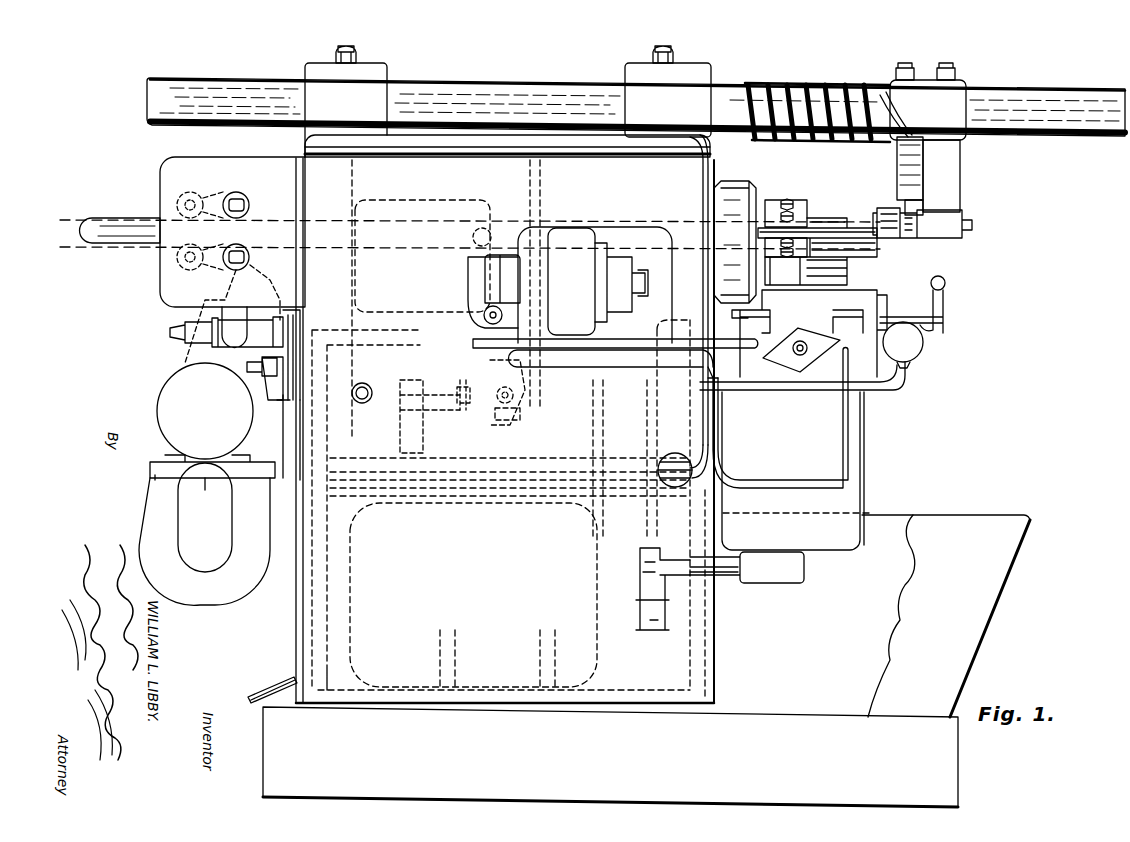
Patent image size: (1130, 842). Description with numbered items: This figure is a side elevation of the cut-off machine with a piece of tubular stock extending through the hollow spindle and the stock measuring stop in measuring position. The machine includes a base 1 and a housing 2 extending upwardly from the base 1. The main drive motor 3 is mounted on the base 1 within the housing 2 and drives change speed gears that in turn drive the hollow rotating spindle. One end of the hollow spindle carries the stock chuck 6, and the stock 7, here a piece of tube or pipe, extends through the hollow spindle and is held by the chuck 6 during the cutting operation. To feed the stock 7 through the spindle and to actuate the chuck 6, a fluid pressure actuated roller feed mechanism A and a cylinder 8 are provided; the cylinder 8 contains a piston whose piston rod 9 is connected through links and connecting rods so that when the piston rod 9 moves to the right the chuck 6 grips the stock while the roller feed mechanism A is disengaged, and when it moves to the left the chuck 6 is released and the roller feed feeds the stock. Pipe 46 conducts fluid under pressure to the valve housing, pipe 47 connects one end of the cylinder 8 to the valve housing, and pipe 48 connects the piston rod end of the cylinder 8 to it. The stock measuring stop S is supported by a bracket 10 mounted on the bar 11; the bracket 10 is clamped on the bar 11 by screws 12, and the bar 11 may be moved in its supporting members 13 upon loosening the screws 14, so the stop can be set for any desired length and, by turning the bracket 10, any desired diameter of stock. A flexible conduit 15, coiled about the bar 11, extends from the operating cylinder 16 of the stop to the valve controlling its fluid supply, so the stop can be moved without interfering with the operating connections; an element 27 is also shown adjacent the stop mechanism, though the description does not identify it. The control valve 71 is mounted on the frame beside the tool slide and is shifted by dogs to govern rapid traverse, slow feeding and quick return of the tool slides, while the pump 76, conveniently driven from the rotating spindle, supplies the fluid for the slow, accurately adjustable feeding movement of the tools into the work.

The base 1 is at (285, 737).
The housing 2 is at (305, 595).
The main drive motor 3 is at (475, 575).
The stock chuck 6 is at (733, 185).
The stock 7 is at (123, 244).
The cylinder 8 is at (405, 418).
The piston rod 9 is at (466, 412).
The bracket 10 is at (945, 164).
The bar 11 is at (511, 100).
The screws 12 is at (948, 64).
The supporting members 13 is at (365, 80).
The screws 14 is at (357, 52).
The flexible conduit 15 is at (815, 95).
The operating cylinder 16 is at (908, 165).
The bolt plate 27 is at (897, 215).
The pipe 46 is at (285, 680).
The pipe 47 is at (704, 415).
The pipe 48 is at (462, 468).
The control valve 71 is at (922, 350).
The pump 76 is at (573, 238).
The roller feed mechanism A is at (178, 293).
The stock measuring stop S is at (940, 230).